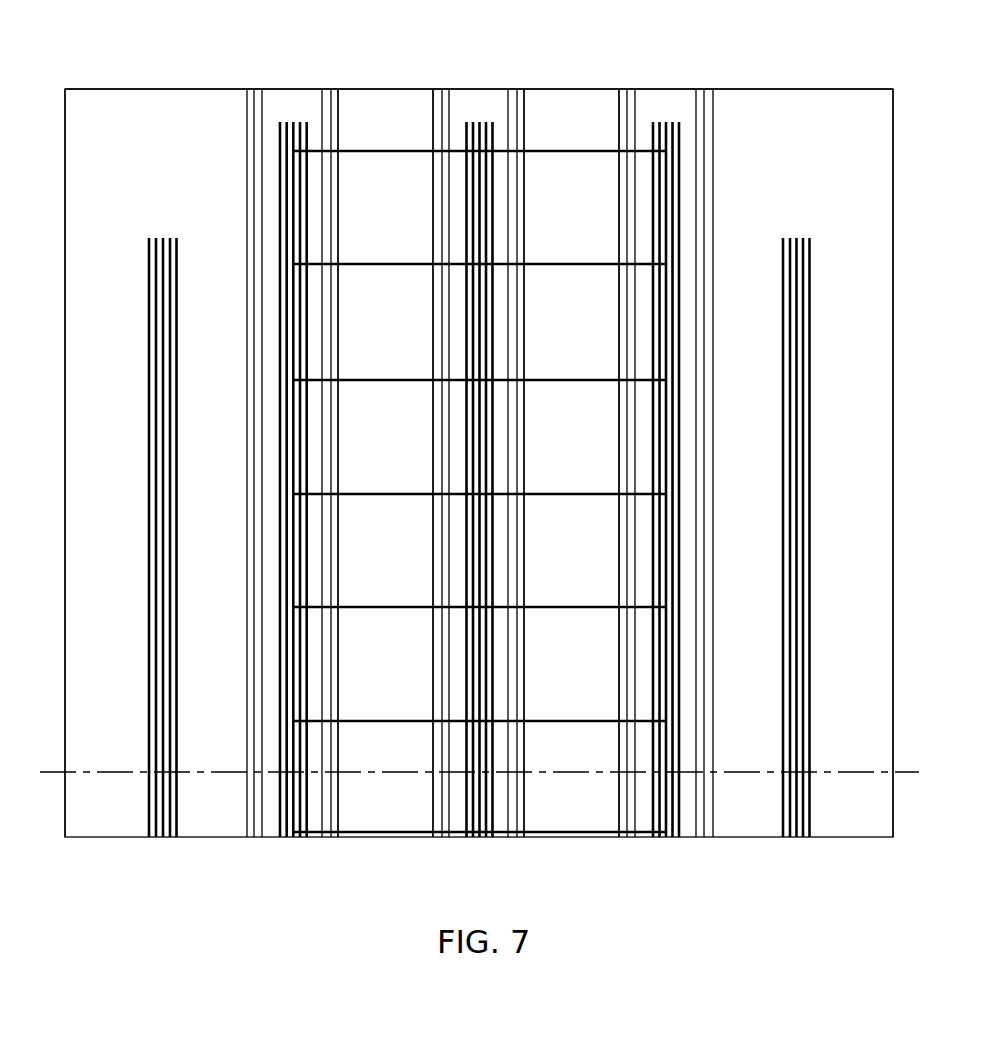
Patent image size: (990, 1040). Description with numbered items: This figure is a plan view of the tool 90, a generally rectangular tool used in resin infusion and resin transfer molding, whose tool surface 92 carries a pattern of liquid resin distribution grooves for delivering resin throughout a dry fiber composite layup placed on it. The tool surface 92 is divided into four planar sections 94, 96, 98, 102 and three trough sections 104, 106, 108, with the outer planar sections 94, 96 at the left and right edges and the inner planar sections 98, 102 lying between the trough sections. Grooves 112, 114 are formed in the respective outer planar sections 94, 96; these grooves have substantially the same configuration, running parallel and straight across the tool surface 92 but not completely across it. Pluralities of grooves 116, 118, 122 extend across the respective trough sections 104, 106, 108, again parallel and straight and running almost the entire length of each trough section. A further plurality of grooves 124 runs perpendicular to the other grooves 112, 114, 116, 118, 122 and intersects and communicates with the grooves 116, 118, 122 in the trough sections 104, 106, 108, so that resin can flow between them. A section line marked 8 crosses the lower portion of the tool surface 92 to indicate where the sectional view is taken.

The tool 90 is at (912, 72).
The tool surface 92 is at (862, 259).
The planar section 94 is at (103, 165).
The planar section 96 is at (873, 422).
The planar section 98 is at (383, 118).
The planar section 102 is at (571, 118).
The trough section 104 is at (294, 105).
The trough section 106 is at (481, 103).
The trough section 108 is at (662, 103).
The grooves 112 is at (163, 851).
The grooves 114 is at (796, 851).
The grooves 116 is at (293, 851).
The grooves 118 is at (479, 851).
The grooves 122 is at (667, 851).
The grooves 124 is at (387, 851).
The section line 8- 8 is at (40, 772).